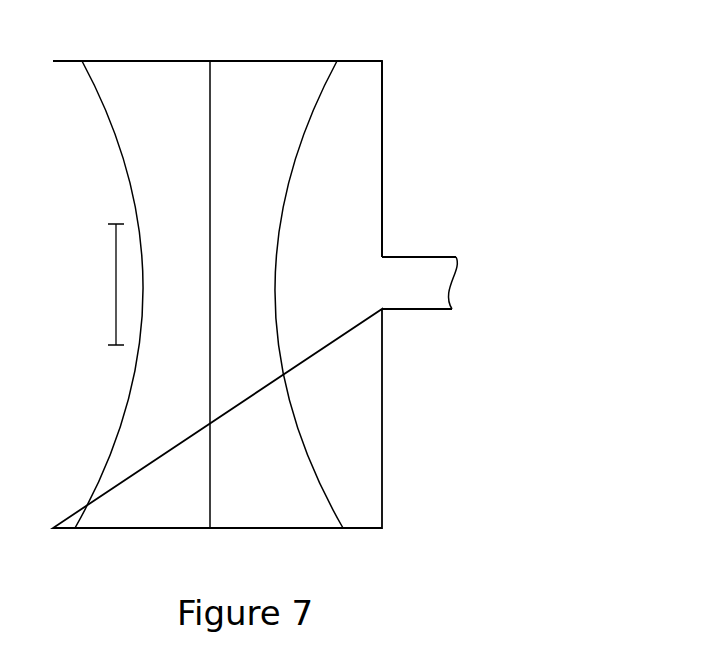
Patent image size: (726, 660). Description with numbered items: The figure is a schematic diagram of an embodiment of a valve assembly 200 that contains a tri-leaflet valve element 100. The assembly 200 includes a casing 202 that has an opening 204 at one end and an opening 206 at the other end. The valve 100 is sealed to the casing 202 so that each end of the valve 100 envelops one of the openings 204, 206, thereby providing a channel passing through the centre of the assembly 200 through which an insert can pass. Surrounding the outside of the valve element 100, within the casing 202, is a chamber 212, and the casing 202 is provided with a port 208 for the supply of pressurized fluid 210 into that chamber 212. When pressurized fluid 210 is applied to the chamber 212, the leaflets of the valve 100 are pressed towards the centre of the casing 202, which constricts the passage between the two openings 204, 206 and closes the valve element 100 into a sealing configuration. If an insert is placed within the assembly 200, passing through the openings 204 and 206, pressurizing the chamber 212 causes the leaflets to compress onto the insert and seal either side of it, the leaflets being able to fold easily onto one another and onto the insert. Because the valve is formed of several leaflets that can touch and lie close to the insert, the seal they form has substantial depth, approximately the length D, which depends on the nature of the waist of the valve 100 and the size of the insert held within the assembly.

The tri-leaflet valve element 100 is at (227, 167).
The valve assembly 200 is at (407, 70).
The casing 202 is at (382, 177).
The opening 204 is at (222, 82).
The opening 206 is at (188, 535).
The port 208 is at (420, 317).
The pressurized fluid 210 is at (420, 288).
The chamber 212 is at (300, 300).
The length of the seal D is at (105, 284).